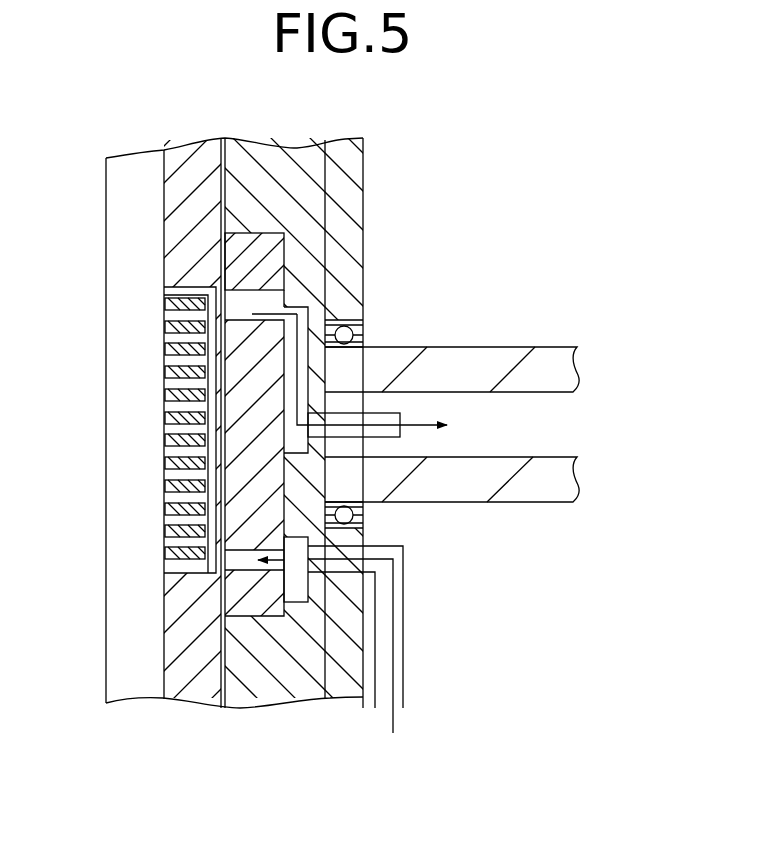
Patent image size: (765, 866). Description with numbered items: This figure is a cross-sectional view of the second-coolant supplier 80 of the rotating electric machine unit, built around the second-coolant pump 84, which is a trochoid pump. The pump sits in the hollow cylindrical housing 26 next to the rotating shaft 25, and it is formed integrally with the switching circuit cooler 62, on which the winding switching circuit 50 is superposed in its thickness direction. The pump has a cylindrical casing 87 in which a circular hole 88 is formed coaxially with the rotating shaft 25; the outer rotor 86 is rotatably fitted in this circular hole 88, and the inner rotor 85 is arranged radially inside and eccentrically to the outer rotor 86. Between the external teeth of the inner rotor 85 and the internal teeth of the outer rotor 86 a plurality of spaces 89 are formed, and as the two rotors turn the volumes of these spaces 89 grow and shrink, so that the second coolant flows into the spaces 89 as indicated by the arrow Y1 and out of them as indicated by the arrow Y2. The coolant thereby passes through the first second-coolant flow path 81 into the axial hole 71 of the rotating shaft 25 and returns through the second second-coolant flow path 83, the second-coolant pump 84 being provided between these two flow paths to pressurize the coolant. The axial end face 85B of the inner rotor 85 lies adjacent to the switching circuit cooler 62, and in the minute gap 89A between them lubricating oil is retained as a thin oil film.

The rotating shaft 25 is at (548, 353).
The housing 26 is at (341, 154).
The winding switching circuit 50 is at (113, 623).
The switching circuit cooler 62 is at (192, 694).
The axial hole 71 is at (565, 395).
The second-coolant supplier 80 is at (402, 193).
The first second-coolant flow path 81 is at (360, 412).
The second second-coolant flow path 83 is at (403, 679).
The second-coolant pump 84 is at (278, 740).
The inner rotor 85 is at (243, 548).
The axial end face 85B is at (211, 320).
The outer rotor 86 is at (247, 602).
The casing 87 is at (268, 147).
The circular hole 88 is at (232, 232).
The spaces 89 is at (288, 300).
The minute gap 89A is at (222, 343).
The arrow Y1 is at (396, 722).
The arrow Y2 is at (430, 432).